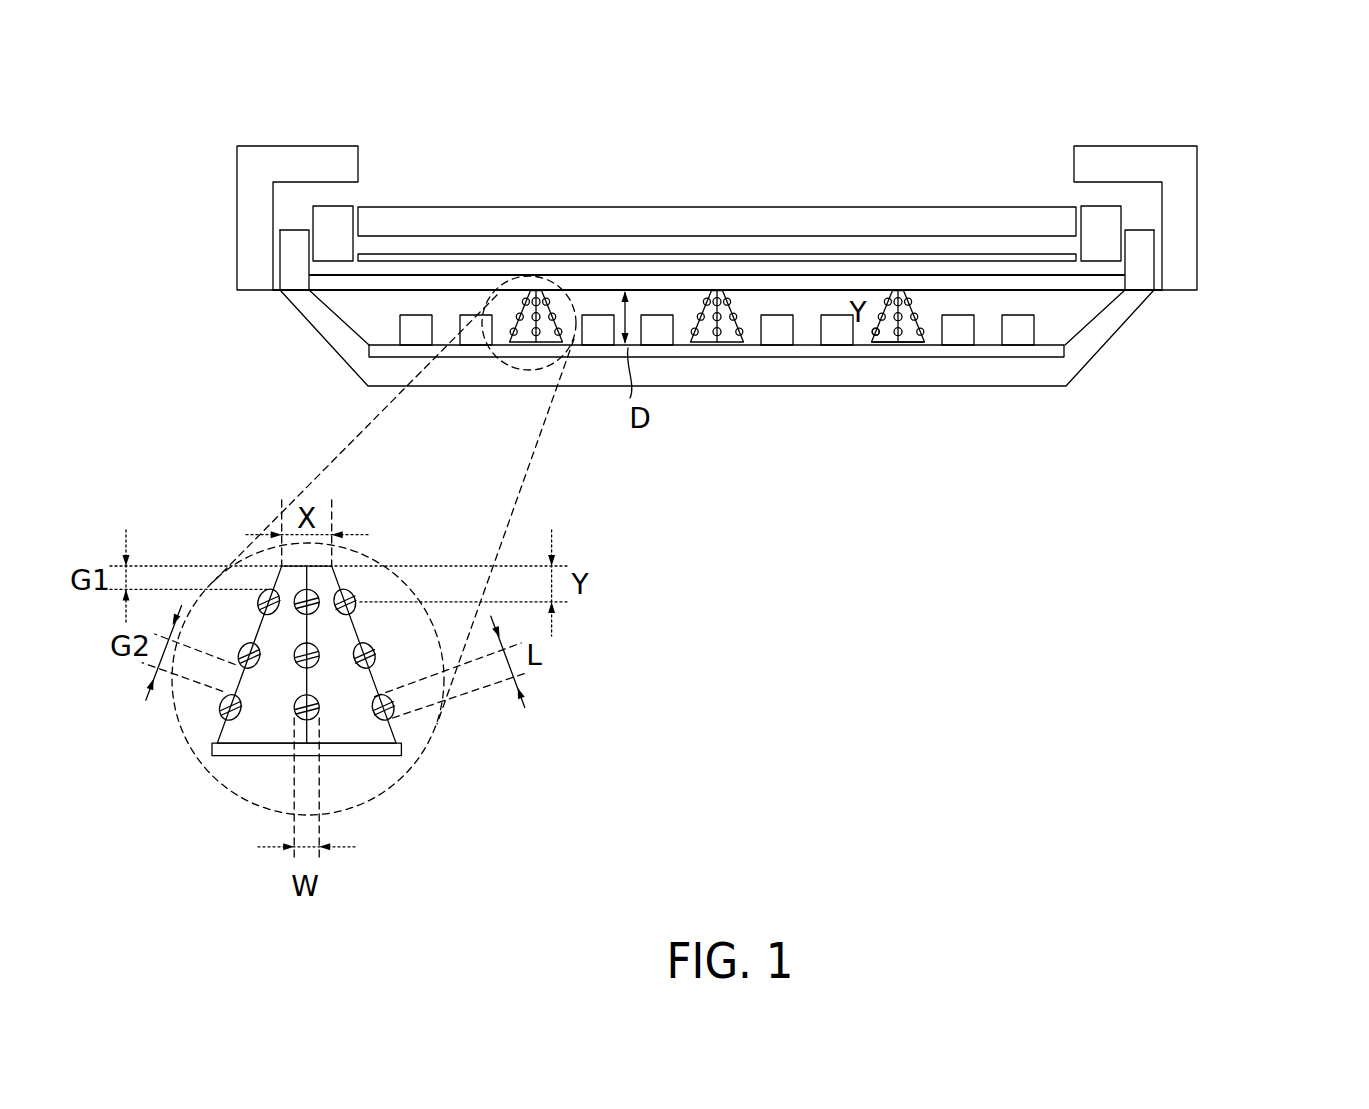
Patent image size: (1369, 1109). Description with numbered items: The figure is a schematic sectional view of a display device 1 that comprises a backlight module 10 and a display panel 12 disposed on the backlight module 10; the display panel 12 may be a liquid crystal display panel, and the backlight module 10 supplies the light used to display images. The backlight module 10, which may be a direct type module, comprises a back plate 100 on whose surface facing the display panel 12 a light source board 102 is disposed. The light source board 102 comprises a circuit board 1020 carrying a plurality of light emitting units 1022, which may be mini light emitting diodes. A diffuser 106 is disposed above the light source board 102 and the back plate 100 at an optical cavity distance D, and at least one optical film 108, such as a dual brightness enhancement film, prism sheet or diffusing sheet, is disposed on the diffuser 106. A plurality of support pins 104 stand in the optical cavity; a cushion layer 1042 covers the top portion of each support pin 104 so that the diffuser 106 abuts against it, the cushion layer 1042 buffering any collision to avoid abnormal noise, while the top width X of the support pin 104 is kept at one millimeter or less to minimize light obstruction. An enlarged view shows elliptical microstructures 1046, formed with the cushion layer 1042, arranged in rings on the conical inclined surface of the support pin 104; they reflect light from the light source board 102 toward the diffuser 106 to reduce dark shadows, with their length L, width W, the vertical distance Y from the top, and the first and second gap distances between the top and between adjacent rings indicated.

The display device 1 is at (1266, 122).
The backlight module 10 is at (1093, 369).
The display panel 12 is at (752, 207).
The back plate 100 is at (1022, 388).
The light source board 102 is at (1042, 327).
The support pin 104 is at (923, 308).
The diffuser 106 is at (388, 275).
The optical film 108 is at (485, 255).
The circuit board 1020 is at (393, 352).
The light emitting unit 1022 is at (410, 331).
The cushion layer 1042 is at (907, 340).
The microstructure 1046 is at (876, 332).